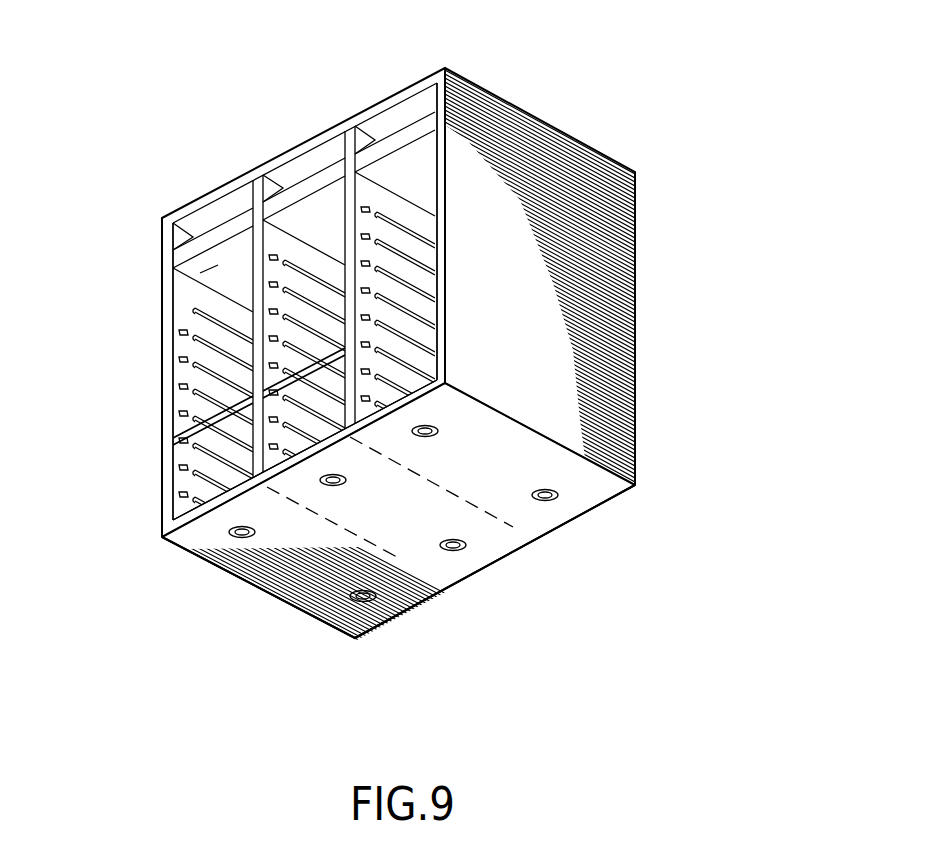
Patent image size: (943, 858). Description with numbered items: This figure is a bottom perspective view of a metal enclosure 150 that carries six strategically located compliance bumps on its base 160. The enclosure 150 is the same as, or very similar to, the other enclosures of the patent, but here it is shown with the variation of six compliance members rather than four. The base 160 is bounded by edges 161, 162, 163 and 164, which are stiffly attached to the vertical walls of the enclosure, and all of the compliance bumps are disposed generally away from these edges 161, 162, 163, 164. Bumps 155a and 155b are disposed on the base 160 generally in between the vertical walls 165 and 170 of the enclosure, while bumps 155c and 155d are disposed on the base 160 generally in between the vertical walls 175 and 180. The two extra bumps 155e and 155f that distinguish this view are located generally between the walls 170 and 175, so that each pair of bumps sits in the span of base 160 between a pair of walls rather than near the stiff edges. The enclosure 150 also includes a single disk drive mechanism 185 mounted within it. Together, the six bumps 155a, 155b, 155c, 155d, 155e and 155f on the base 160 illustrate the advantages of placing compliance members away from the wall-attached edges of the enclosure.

The enclosure 150 is at (630, 98).
The compliance bump 155a is at (240, 537).
The compliance bump 155b is at (363, 600).
The compliance bump 155c is at (426, 437).
The compliance bump 155d is at (545, 500).
The compliance bump 155e is at (333, 485).
The compliance bump 155f is at (456, 550).
The base 160 is at (457, 567).
The edge of base 161 is at (270, 597).
The edge of base 162 is at (217, 490).
The edge of base 163 is at (483, 404).
The edge of base 164 is at (413, 608).
The vertical wall 165 is at (167, 420).
The vertical wall 170 is at (256, 334).
The vertical wall 175 is at (352, 192).
The vertical wall 180 is at (442, 257).
The disk drive mechanism 185 is at (187, 278).